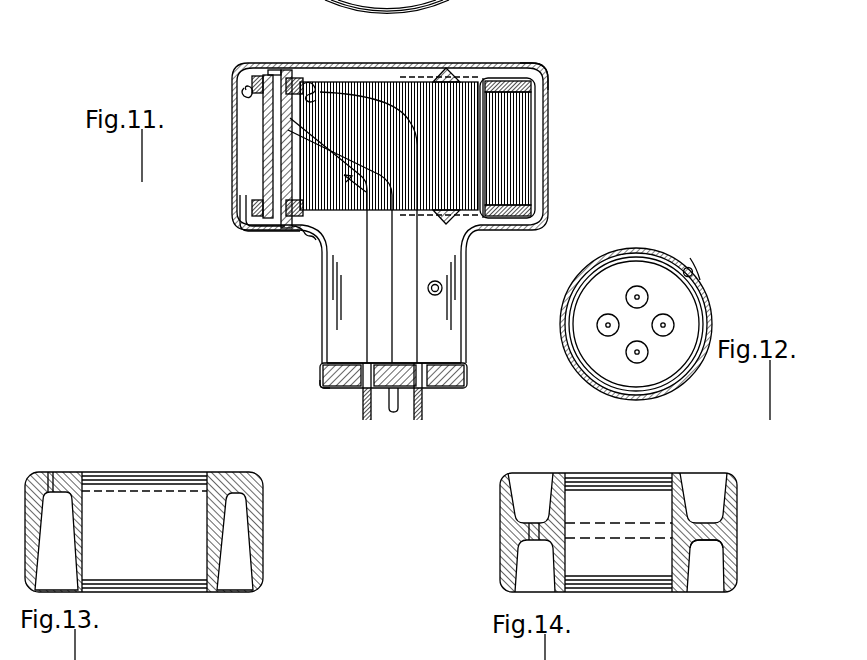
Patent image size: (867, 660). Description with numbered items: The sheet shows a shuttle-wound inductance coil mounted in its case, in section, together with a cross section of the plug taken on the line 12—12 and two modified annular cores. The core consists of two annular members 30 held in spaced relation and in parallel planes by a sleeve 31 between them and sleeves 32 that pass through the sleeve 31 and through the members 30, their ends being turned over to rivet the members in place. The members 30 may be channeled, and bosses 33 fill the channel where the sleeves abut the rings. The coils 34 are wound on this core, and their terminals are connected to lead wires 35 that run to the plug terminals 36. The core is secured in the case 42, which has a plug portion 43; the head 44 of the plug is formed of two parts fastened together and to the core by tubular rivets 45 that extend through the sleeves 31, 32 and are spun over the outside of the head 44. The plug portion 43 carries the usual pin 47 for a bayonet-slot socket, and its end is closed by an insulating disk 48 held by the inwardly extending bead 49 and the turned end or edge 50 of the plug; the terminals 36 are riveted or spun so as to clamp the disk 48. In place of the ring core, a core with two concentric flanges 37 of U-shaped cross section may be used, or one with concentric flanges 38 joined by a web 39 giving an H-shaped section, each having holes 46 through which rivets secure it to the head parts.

In FIG. 11, the section line 12— 12 is at (490, 287).
In FIG. 11, the annular members 30 is at (523, 83).
In FIG. 11, the sleeve 31 is at (266, 162).
In FIG. 11, the sleeves 32 is at (272, 180).
In FIG. 11, the bosses 33 is at (256, 84).
In FIG. 11, the coils 34 is at (477, 83).
In FIG. 11, the lead wires 35 is at (310, 137).
In FIG. 12, the lead wires 35 is at (636, 297).
In FIG. 11, the plug terminals 36 is at (362, 404).
In FIG. 12, the plug terminals 36 is at (666, 334).
In FIG. 13, the flanges 37 is at (262, 525).
In FIG. 14, the flanges 38 is at (560, 485).
In FIG. 14, the web 39 is at (708, 535).
In FIG. 11, the case 42 is at (534, 67).
In FIG. 11, the plug portion 43 is at (462, 316).
In FIG. 12, the plug portion 43 is at (720, 270).
In FIG. 11, the head 44 is at (548, 143).
In FIG. 11, the tubular rivets 45 is at (270, 227).
In FIG. 13, the holes 46 is at (50, 476).
In FIG. 14, the holes 46 is at (536, 536).
In FIG. 11, the pin 47 is at (444, 292).
In FIG. 12, the pin 47 is at (692, 269).
In FIG. 11, the insulating disk 48 is at (463, 383).
In FIG. 12, the insulating disk 48 is at (607, 368).
In FIG. 11, the inwardly extending bead 49 is at (339, 362).
In FIG. 11, the turned end or edge 50 is at (322, 388).